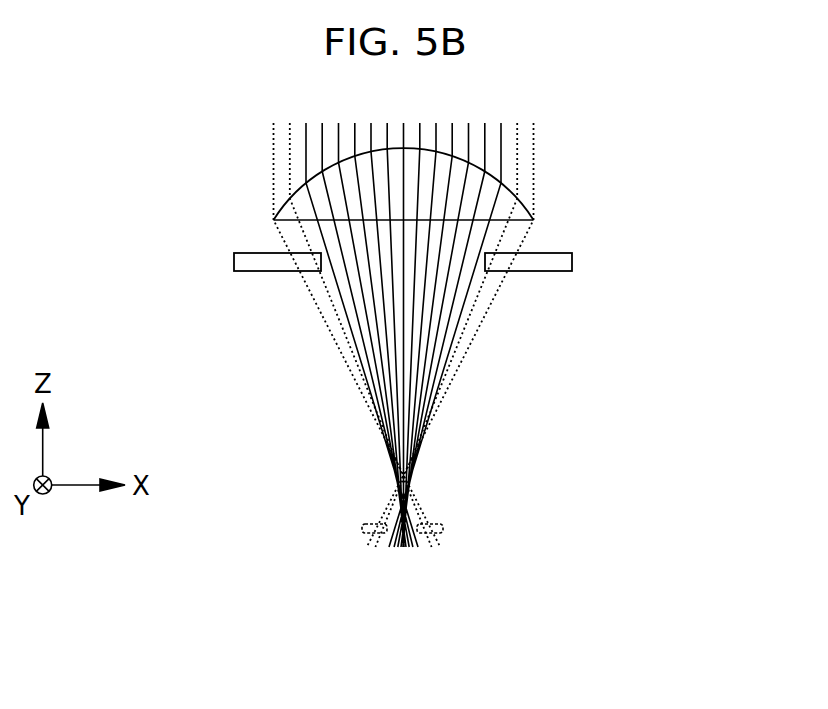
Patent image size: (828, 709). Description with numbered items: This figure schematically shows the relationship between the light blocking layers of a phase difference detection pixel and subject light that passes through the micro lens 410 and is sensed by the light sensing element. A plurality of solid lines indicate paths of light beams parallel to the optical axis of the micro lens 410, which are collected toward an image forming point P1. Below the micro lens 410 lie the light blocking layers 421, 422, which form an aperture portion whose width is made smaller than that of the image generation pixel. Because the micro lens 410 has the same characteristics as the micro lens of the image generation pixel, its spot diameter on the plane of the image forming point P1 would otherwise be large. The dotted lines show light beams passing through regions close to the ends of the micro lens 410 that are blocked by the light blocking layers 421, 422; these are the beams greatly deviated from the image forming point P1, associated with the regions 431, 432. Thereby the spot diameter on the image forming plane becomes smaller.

The micro lens 410 is at (530, 202).
The light blocking layer 421 is at (262, 268).
The light blocking layer 422 is at (540, 267).
The region 431 is at (365, 524).
The region 432 is at (445, 525).
The image forming point P1 is at (407, 498).